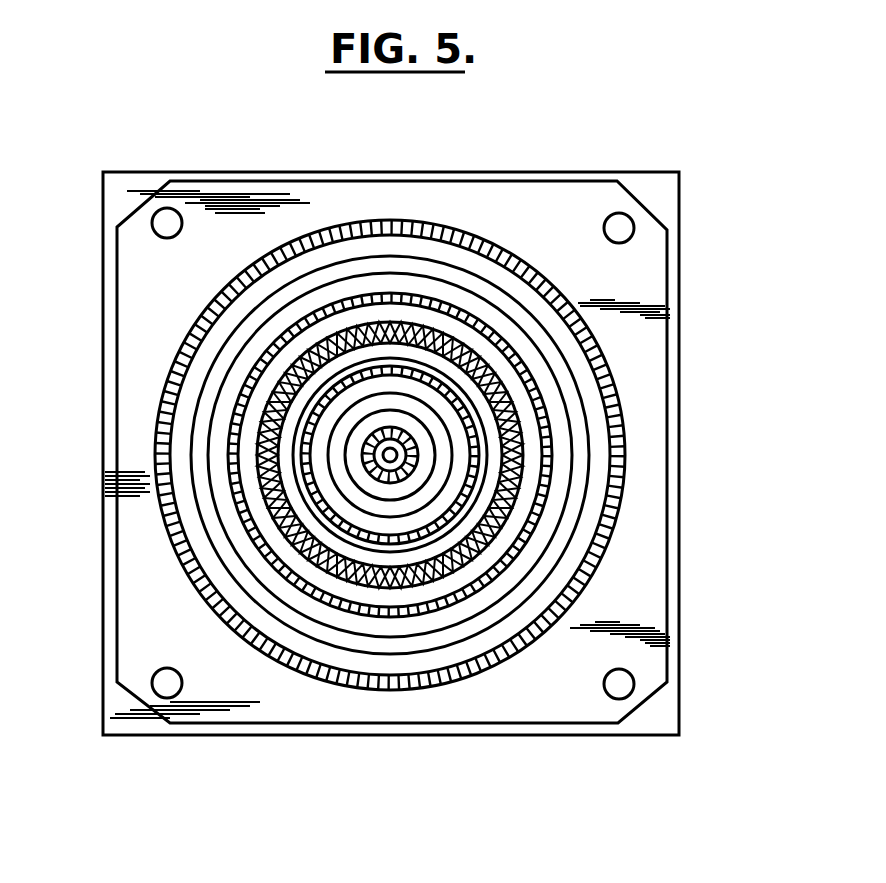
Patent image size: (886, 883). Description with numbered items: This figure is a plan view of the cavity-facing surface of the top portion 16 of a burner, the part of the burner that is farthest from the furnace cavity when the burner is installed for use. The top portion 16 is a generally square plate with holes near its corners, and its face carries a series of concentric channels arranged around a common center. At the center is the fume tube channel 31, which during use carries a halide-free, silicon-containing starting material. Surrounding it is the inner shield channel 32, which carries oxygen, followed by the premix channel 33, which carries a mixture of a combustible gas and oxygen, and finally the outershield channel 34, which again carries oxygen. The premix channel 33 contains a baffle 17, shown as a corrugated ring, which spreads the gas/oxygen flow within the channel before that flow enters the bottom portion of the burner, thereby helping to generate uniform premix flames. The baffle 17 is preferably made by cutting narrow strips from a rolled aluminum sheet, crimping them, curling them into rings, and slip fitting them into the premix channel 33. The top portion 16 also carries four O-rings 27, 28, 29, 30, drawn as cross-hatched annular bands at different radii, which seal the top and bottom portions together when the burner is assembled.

The top portion 16 is at (547, 202).
The baffle 17 is at (497, 537).
The O-ring 27 is at (385, 450).
The O-ring 28 is at (320, 420).
The O-ring 29 is at (262, 362).
The O-ring 30 is at (210, 310).
The fume tube channel 31 is at (400, 460).
The inner shield channel 32 is at (447, 440).
The premix channel 33 is at (493, 368).
The outershield channel 34 is at (508, 305).